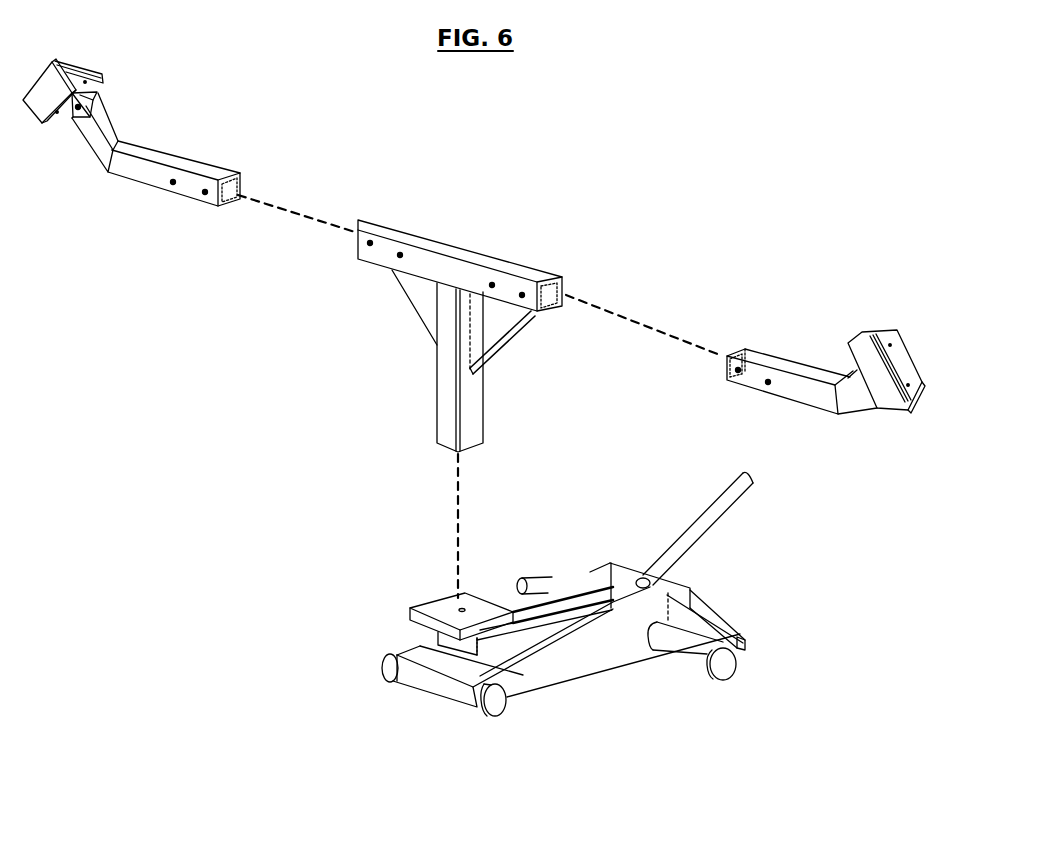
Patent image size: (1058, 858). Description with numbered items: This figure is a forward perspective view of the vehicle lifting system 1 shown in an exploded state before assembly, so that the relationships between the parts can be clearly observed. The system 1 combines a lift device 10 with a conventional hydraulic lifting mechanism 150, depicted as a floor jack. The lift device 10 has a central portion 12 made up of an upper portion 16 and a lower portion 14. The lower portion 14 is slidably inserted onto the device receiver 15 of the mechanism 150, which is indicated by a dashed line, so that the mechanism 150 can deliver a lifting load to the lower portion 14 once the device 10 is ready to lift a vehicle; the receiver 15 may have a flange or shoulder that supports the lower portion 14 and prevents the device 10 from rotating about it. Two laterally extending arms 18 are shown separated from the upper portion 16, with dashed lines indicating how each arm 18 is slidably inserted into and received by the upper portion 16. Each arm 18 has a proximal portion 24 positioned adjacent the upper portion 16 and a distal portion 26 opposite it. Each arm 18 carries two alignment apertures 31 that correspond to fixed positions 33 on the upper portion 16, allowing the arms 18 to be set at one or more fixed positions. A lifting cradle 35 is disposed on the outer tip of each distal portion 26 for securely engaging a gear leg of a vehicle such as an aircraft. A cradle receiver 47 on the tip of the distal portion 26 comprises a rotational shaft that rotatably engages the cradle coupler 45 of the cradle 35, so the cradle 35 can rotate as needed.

The system 1 is at (177, 470).
The lift device 10 is at (628, 178).
The central portion 12 is at (514, 352).
The lower portion 14 is at (453, 370).
The upper portion 16 is at (462, 253).
The fixed positions 33 is at (400, 255).
The laterally extending arms 18 is at (118, 183).
The proximal portion 24 is at (152, 182).
The distal portion 26 is at (100, 150).
The alignment apertures 31 is at (205, 192).
The lifting cradle 35 is at (82, 68).
The cradle coupler 45 is at (97, 97).
The cradle receiver 47 is at (70, 117).
The device receiver 15 is at (425, 623).
The hydraulic lifting mechanism 150 is at (571, 667).